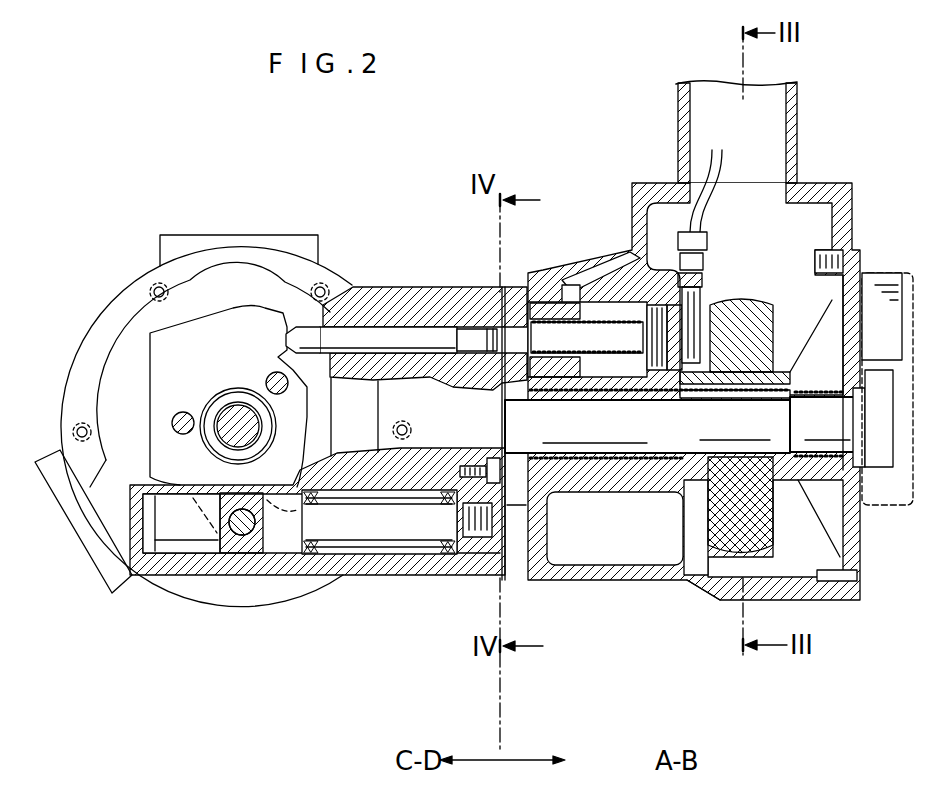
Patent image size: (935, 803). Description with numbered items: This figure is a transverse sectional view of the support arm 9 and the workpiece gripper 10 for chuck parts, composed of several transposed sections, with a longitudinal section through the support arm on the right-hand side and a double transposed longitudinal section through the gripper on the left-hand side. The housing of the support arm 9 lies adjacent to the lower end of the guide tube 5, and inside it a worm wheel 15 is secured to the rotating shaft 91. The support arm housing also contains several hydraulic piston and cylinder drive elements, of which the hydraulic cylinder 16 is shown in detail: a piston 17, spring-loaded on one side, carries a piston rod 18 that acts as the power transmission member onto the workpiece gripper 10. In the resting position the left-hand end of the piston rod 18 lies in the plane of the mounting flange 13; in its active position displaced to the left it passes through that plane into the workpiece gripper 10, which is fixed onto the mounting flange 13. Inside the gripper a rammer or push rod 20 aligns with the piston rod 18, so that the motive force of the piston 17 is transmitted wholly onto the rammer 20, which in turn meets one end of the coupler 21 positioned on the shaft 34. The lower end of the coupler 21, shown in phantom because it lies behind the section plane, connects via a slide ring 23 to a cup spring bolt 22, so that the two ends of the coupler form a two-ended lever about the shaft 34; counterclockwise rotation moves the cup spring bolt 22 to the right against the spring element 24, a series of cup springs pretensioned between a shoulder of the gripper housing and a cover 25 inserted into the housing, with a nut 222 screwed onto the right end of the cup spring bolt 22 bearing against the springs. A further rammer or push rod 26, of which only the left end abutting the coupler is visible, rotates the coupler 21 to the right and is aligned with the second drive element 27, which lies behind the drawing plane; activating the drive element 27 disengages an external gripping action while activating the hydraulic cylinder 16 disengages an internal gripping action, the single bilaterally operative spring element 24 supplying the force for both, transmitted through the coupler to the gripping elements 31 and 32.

The guide tube 5 is at (800, 130).
The support arm 9 is at (858, 195).
The workpiece gripper 10 is at (266, 249).
The mounting flange 13 is at (512, 427).
The worm wheel 15 is at (745, 303).
The hydraulic cylinder 16 is at (598, 308).
The piston 17 is at (657, 320).
The piston rod 18 is at (607, 333).
The rammer or push rod 20 is at (390, 330).
The coupler 21 is at (208, 370).
The cup spring bolt 22 is at (155, 523).
The slide ring 23 is at (232, 553).
The spring element 24 is at (425, 547).
The cover 25 is at (512, 562).
The rammer or push rod 26 is at (375, 577).
The drive element 27 is at (663, 553).
The gripping element 31 is at (197, 243).
The gripping element 32 is at (125, 580).
The shaft 34 is at (235, 440).
The rotating shaft 91 is at (671, 441).
The nut 222 is at (513, 537).